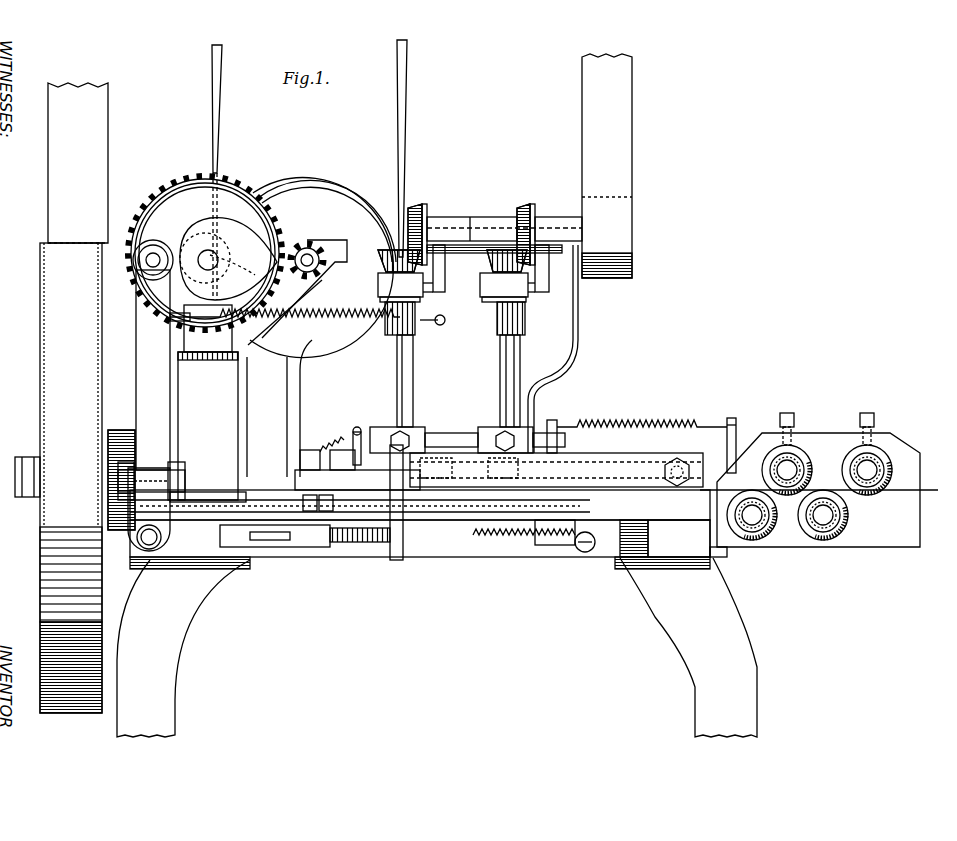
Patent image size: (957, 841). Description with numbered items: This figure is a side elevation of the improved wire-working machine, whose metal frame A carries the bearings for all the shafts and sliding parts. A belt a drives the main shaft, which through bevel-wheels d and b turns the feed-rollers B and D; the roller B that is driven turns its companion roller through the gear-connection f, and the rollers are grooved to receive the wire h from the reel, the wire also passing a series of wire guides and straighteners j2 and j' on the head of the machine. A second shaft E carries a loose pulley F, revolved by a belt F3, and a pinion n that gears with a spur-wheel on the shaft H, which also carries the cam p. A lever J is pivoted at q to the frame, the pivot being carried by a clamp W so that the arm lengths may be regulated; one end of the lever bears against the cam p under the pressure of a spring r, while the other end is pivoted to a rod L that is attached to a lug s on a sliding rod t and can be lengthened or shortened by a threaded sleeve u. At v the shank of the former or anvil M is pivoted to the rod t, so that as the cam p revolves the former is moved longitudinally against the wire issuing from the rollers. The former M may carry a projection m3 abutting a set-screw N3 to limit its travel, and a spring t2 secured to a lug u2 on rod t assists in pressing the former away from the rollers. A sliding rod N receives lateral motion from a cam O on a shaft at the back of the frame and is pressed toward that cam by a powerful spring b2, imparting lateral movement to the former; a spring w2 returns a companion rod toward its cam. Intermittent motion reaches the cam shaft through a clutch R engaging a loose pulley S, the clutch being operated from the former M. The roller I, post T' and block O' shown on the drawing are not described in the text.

The loose pulley S is at (74, 398).
The clutch R is at (121, 470).
The pivot q is at (149, 501).
The clamp W is at (159, 473).
The lever J is at (153, 370).
The frame A is at (420, 361).
The loose pulley F is at (322, 268).
The cam O is at (205, 248).
The shaft H is at (228, 236).
The cam p is at (232, 261).
The roller I is at (153, 258).
The shaft E is at (307, 260).
The pinion n is at (301, 230).
The spring r is at (285, 316).
The belt F3 is at (319, 148).
The bevel-wheel d is at (473, 224).
The shaft c is at (504, 225).
The bevel-wheel b is at (449, 253).
The roller B is at (411, 381).
The roller D is at (499, 381).
The gear-connection f is at (453, 326).
The belt a is at (607, 166).
The sliding rod t is at (556, 470).
The sliding rod N is at (436, 468).
The pivot v is at (506, 468).
The spring b2 is at (593, 438).
The spring t2 is at (637, 428).
The lug u2 is at (614, 481).
The former M is at (357, 480).
The rod L is at (420, 511).
The lug s is at (590, 538).
The threaded sleeve u is at (305, 527).
The post T' is at (398, 502).
The block O' is at (325, 462).
The spring w2 is at (345, 437).
The wire h is at (650, 482).
The projection m3 is at (303, 505).
The set-screw N3 is at (312, 508).
The feed roller j' is at (825, 454).
The wire guides and straighteners j2 is at (797, 515).